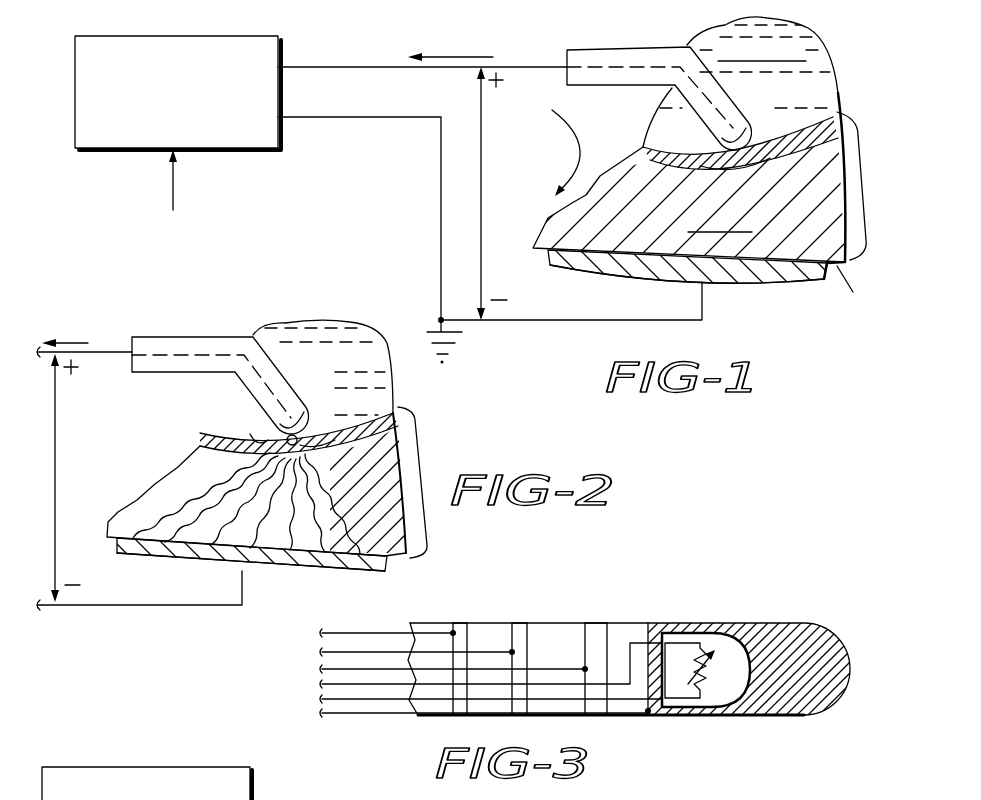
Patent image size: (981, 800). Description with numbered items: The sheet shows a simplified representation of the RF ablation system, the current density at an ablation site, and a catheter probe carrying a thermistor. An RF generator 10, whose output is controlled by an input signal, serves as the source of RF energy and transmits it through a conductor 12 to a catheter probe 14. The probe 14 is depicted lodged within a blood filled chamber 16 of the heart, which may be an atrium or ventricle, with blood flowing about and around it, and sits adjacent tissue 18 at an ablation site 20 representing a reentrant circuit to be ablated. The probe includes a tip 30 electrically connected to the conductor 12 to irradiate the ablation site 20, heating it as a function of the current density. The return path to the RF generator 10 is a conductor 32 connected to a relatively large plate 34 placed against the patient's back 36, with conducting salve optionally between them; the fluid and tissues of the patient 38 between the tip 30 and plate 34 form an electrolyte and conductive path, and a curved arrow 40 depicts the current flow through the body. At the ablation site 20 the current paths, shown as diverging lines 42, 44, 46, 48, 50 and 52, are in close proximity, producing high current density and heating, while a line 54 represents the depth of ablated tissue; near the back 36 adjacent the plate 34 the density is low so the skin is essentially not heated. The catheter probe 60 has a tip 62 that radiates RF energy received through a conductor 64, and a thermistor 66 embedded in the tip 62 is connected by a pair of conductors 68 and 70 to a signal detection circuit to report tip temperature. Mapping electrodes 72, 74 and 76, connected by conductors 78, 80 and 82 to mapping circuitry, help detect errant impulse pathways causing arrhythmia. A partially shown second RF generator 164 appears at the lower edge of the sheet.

In FIG. 1, the RF generator 10 is at (289, 56).
In FIG. 1, the conductor 12 is at (356, 40).
In FIG. 2, the conductor 12 is at (116, 352).
In FIG. 1, the catheter probe 14 is at (624, 46).
In FIG. 2, the catheter probe 14 is at (204, 316).
In FIG. 1, the blood filled chamber 16 is at (832, 100).
In FIG. 2, the blood filled chamber 16 is at (394, 393).
In FIG. 1, the tissue 18 is at (668, 162).
In FIG. 2, the tissue 18 is at (205, 434).
In FIG. 1, the ablation site 20 is at (737, 162).
In FIG. 2, the ablation site 20 is at (318, 428).
In FIG. 1, the tip 30 is at (749, 118).
In FIG. 2, the tip 30 is at (298, 418).
In FIG. 1, the conductor 32 is at (590, 322).
In FIG. 2, the conductor 32 is at (140, 606).
In FIG. 1, the plate 34 is at (722, 282).
In FIG. 2, the plate 34 is at (265, 570).
In FIG. 1, the patient's back 36 is at (628, 274).
In FIG. 2, the patient's back 36 is at (405, 562).
In FIG. 1, the fluid and tissues of the patient 38 is at (862, 184).
In FIG. 2, the fluid and tissues of the patient 38 is at (420, 452).
In FIG. 1, the current path 40 is at (586, 140).
In FIG. 2, the current path 42 is at (183, 498).
In FIG. 2, the current path 44 is at (212, 500).
In FIG. 2, the current path 46 is at (250, 515).
In FIG. 2, the current path 48 is at (288, 522).
In FIG. 2, the current path 50 is at (328, 518).
In FIG. 2, the current path 52 is at (362, 511).
In FIG. 2, the line 54 is at (258, 438).
In FIG. 3, the catheter probe 60 is at (725, 727).
In FIG. 3, the tip 62 is at (805, 632).
In FIG. 3, the conductor 64 is at (380, 715).
In FIG. 3, the thermistor 66 is at (738, 645).
In FIG. 3, the conductor 68 is at (340, 715).
In FIG. 3, the conductor 70 is at (332, 682).
In FIG. 3, the mapping electrode 72 is at (598, 623).
In FIG. 3, the mapping electrode 74 is at (520, 623).
In FIG. 3, the mapping electrode 76 is at (457, 623).
In FIG. 3, the conductor 78 is at (342, 669).
In FIG. 3, the conductor 80 is at (366, 652).
In FIG. 3, the conductor 82 is at (390, 633).
In FIG. 3, the RF generator 164 is at (250, 785).